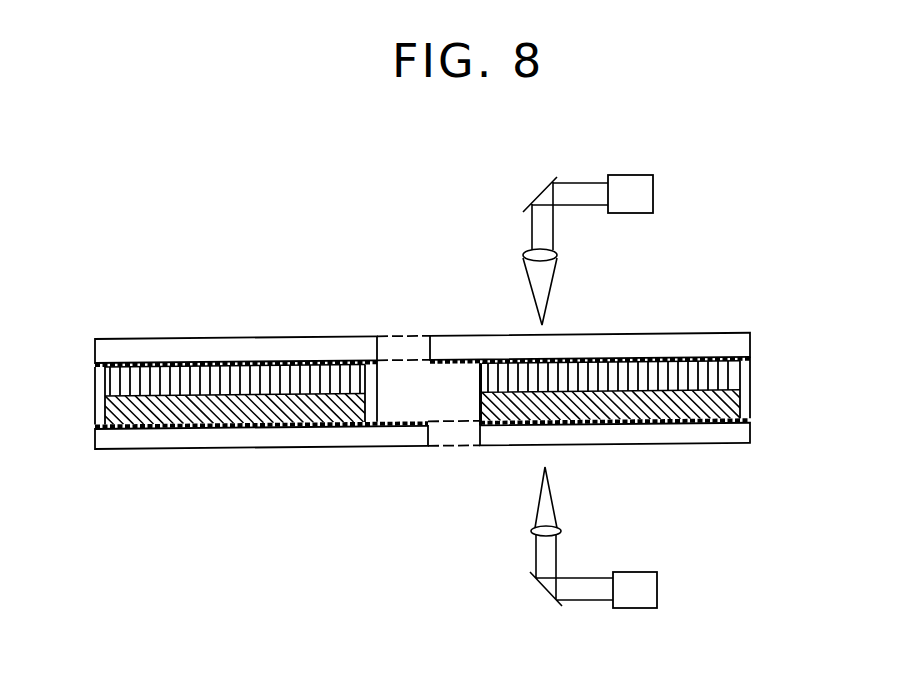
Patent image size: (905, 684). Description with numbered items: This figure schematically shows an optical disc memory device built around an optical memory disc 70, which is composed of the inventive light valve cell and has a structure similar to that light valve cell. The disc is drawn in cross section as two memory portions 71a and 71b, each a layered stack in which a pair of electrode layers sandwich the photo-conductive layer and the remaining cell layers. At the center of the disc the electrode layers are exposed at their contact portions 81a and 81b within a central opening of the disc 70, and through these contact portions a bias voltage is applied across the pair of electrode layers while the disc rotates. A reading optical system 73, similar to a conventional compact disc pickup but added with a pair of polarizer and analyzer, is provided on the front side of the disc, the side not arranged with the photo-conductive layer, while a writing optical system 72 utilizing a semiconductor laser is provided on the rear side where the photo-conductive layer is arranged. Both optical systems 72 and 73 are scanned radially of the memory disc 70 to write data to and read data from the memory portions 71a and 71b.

The optical memory disc 70 is at (73, 340).
The memory portion 71a is at (358, 452).
The memory portion 71b is at (740, 448).
The writing optical system 72 is at (513, 468).
The reading optical system 73 is at (672, 172).
The contact portion 81a is at (399, 422).
The contact portion 81b is at (453, 368).